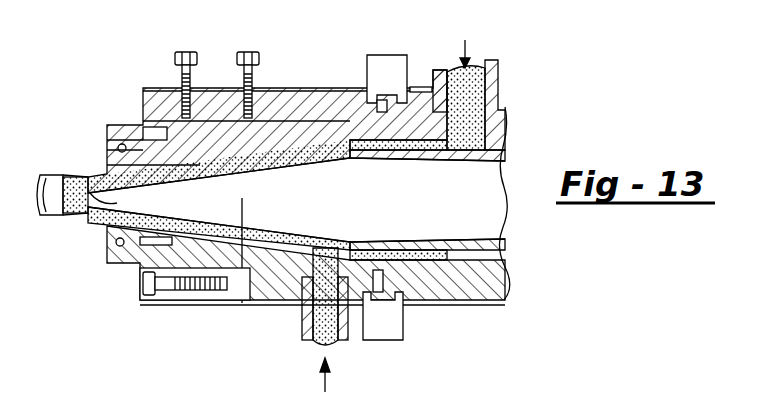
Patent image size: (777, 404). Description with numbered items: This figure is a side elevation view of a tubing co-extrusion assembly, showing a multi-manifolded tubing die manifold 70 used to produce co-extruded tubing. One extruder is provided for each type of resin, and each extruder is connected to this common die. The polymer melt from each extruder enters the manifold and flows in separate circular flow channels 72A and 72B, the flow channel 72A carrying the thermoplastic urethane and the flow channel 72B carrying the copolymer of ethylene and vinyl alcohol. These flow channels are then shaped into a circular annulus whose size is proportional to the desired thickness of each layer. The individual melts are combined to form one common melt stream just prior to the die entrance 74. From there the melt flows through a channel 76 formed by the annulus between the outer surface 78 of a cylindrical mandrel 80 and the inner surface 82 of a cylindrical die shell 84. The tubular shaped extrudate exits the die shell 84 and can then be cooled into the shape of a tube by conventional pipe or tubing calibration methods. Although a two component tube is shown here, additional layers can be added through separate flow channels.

The housing 70 is at (283, 88).
The circular flow channel 72A is at (303, 147).
The circular flow channel 72B is at (297, 268).
The die entrance 74 is at (220, 125).
The channel 76 is at (131, 148).
The outer surface 78 is at (113, 202).
The cylindrical mandrel 80 is at (245, 283).
The inner surface 82 is at (88, 196).
The cylindrical die shell 84 is at (105, 168).